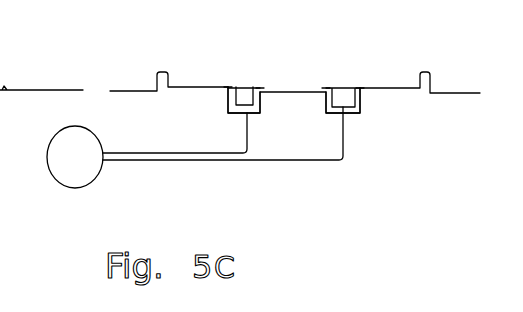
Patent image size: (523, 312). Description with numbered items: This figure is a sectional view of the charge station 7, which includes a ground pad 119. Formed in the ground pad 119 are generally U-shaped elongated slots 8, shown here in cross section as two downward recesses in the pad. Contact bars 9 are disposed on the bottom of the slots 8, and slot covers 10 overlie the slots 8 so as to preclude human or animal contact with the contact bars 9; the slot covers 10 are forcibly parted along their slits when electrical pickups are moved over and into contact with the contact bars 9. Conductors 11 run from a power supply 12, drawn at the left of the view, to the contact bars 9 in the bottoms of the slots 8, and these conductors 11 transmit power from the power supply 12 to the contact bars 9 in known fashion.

The charge station 7 is at (152, 61).
The elongated slots 8 is at (243, 95).
The contact bars 9 is at (330, 112).
The slot covers 10 is at (335, 85).
The conductors 11 is at (330, 162).
The power supply 12 is at (95, 170).
The ground pad 119 is at (388, 87).